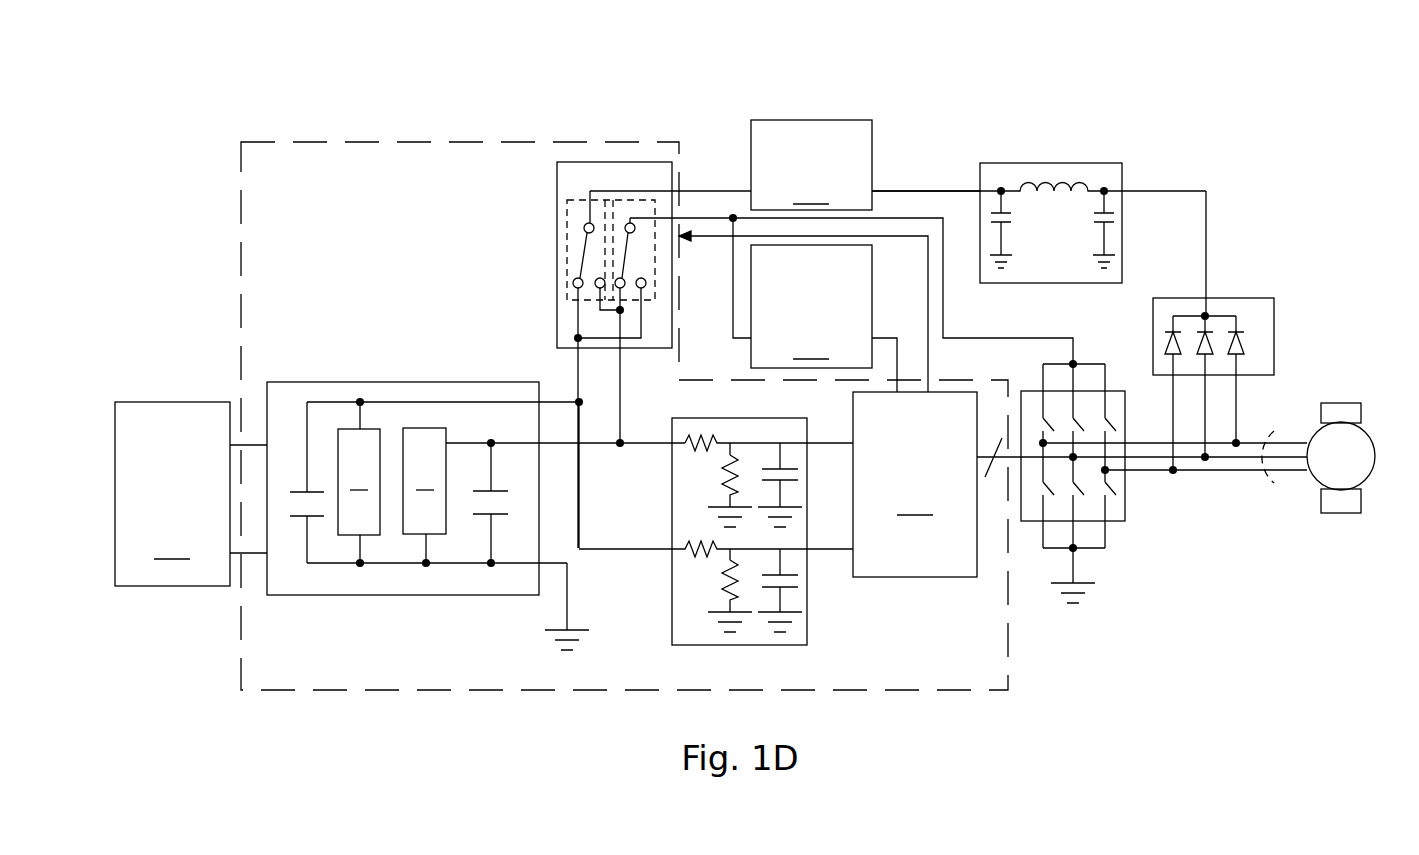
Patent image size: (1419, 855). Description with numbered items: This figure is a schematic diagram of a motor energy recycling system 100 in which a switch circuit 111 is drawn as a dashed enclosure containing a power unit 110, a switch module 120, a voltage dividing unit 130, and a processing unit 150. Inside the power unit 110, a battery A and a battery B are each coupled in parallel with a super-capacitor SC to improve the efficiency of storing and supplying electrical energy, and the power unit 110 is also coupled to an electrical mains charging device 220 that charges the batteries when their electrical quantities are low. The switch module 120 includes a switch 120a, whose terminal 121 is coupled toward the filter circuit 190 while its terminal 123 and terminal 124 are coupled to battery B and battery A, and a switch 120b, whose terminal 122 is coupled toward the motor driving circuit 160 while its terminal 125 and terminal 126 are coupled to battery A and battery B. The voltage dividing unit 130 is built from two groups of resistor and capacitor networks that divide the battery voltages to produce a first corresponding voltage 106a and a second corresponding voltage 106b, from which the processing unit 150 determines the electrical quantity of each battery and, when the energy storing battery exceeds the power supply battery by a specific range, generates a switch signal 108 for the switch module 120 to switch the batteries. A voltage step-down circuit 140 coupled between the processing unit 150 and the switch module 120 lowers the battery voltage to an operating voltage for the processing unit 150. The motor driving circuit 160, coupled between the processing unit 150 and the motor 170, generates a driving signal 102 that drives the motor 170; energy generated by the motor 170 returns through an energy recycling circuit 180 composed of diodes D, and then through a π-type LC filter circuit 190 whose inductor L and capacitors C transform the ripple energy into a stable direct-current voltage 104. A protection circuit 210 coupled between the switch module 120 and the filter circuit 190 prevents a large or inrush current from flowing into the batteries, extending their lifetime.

The motor energy recycling system 100 is at (1222, 86).
The driving signal 102 is at (1283, 475).
The stable direct-current voltage 104 is at (918, 192).
The first corresponding voltage 106a is at (823, 443).
The second corresponding voltage 106b is at (830, 548).
The switch signal 108 is at (878, 237).
The power unit 110 is at (393, 382).
The switch circuit 111 is at (410, 141).
The switch module 120 is at (637, 306).
The switch 120a is at (588, 201).
The switch 120b is at (651, 201).
The terminal 121 is at (583, 227).
The terminal 122 is at (636, 229).
The terminal 123 is at (572, 283).
The terminal 124 is at (596, 289).
The terminal 125 is at (626, 279).
The terminal 126 is at (646, 284).
The voltage dividing unit 130 is at (730, 527).
The voltage step-down circuit 140 is at (824, 318).
The processing unit 150 is at (937, 484).
The motor driving circuit 160 is at (1125, 521).
The motor 170 is at (1330, 403).
The energy recycling circuit 180 is at (1222, 298).
The filter circuit 190 is at (1048, 163).
The protection circuit 210 is at (795, 165).
The electrical mains charging device 220 is at (191, 494).